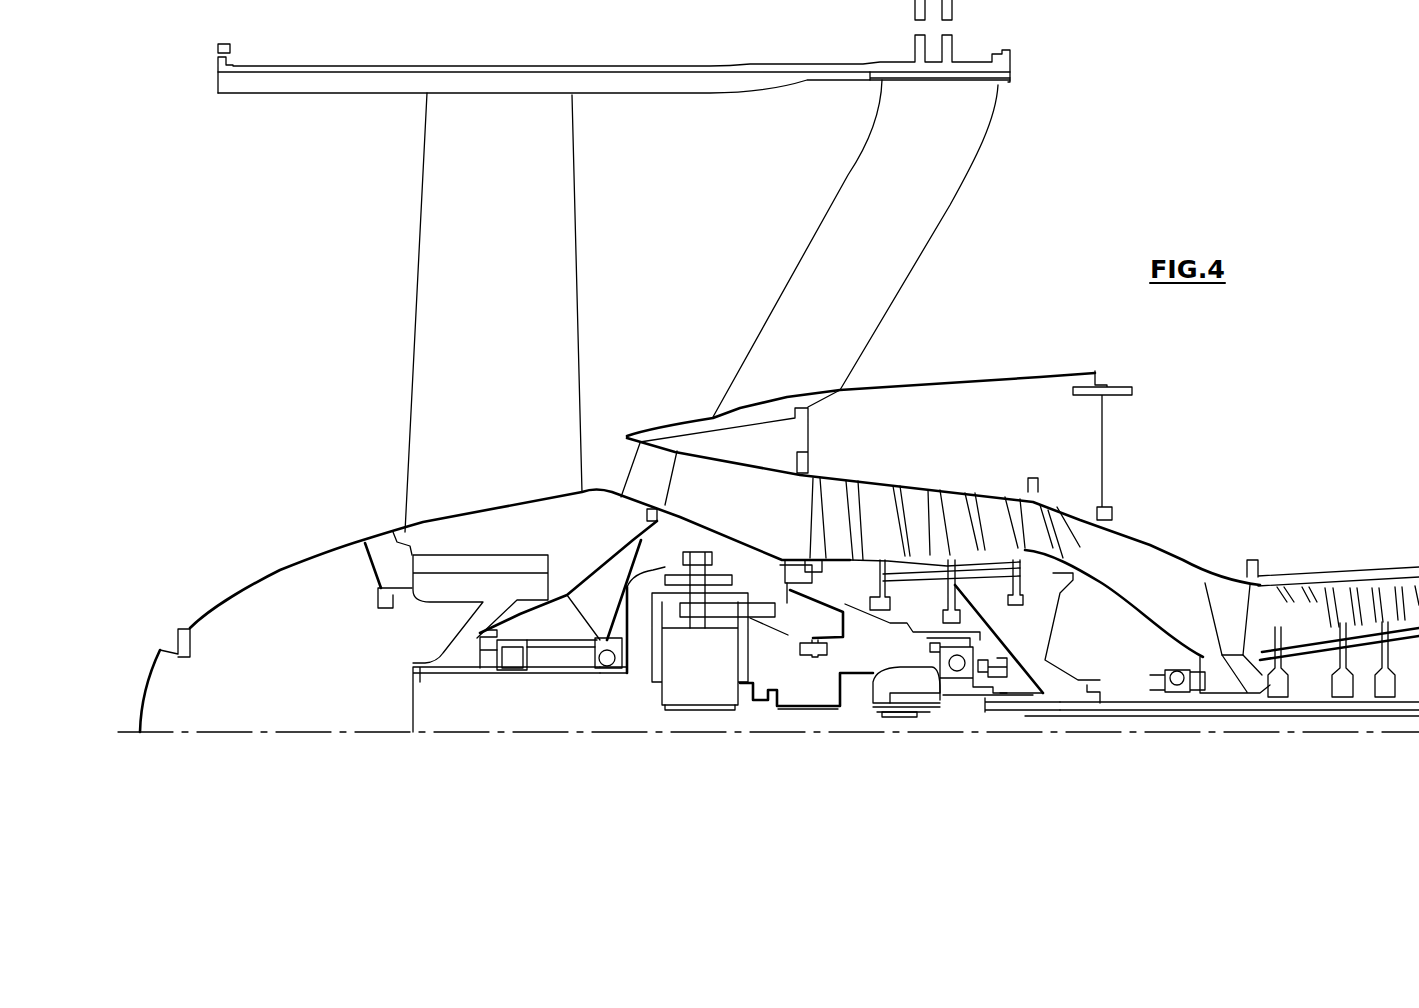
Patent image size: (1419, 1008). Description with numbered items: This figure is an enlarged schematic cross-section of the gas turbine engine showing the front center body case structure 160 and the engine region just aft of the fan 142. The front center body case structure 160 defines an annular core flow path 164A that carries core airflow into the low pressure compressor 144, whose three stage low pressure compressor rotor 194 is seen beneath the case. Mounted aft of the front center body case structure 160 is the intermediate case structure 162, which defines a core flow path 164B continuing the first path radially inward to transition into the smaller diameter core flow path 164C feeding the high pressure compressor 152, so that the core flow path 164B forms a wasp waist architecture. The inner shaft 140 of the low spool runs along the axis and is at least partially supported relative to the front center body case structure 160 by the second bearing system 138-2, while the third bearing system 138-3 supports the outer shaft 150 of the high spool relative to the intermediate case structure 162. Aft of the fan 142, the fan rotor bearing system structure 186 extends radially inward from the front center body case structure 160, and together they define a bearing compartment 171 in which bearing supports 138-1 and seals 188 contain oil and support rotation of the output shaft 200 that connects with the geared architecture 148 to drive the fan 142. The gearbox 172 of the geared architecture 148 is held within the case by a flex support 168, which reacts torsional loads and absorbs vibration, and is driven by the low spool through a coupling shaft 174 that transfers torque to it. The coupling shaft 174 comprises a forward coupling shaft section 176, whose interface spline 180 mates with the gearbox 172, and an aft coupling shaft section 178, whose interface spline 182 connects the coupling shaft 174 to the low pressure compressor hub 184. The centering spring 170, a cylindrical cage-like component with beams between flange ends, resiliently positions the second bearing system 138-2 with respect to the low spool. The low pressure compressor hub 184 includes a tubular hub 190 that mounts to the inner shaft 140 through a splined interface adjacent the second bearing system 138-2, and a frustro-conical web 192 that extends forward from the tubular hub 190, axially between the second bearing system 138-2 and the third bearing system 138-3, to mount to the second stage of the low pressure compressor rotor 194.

The fan 142 is at (518, 289).
The low pressure compressor 144 is at (948, 497).
The low pressure compressor rotor 194 is at (977, 550).
The intermediate case structure 162 is at (1155, 540).
The high pressure compressor 152 is at (1331, 558).
The core flow path 164A is at (743, 501).
The core flow path 164B is at (1193, 606).
The core flow path 164C is at (1318, 627).
The front center body case structure 160 is at (833, 563).
The fan rotor bearing system structure 186 is at (585, 557).
The centering spring 170 is at (765, 585).
The bearing compartment 171 is at (883, 659).
The gearbox 172 is at (720, 677).
The flex support 168 is at (784, 638).
The seals 188 is at (490, 650).
The bearing supports 138-1 is at (552, 660).
The #2 bearing system 138-2 is at (873, 705).
The #3 bearing system 138-3 is at (1183, 692).
The output shaft 200 is at (560, 670).
The geared architecture 148 is at (635, 700).
The interface spline 180 is at (700, 712).
The forward coupling shaft section 176 is at (773, 712).
The coupling shaft 174 is at (803, 713).
The interface spline 182 is at (910, 708).
The low pressure compressor hub 184 is at (998, 706).
The inner shaft 140 is at (1052, 712).
The outer shaft 150 is at (1252, 693).
The aft coupling shaft section 178 is at (883, 684).
The tubular hub 190 is at (1050, 688).
The frustro-conical web 192 is at (997, 634).